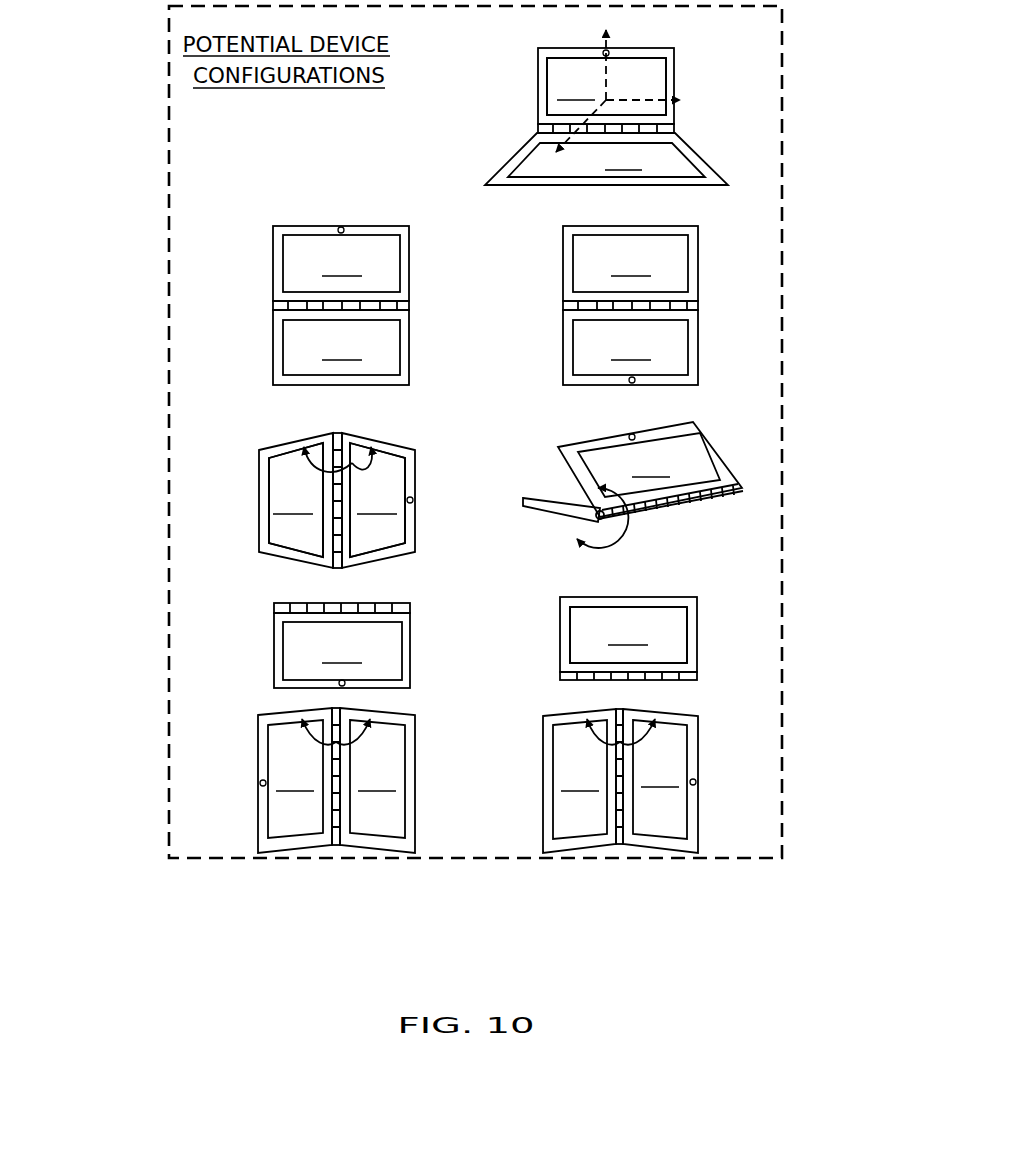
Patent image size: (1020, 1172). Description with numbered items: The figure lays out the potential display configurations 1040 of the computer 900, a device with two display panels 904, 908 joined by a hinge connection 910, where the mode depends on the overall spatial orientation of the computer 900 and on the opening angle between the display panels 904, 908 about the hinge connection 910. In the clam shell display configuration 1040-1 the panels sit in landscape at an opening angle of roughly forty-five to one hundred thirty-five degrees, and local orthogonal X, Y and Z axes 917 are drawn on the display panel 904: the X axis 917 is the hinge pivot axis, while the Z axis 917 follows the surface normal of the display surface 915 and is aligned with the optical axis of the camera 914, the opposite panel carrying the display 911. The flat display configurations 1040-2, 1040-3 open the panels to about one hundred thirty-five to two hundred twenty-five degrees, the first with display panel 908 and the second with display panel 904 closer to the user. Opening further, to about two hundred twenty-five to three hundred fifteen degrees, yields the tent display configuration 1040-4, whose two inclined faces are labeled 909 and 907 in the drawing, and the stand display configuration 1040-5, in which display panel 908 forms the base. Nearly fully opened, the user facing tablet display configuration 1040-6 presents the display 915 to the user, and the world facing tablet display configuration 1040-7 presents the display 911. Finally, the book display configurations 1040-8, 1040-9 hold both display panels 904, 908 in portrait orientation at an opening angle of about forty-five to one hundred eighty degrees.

The potential display configurations 1040 is at (168, 118).
The clam shell display configuration 1040-1 is at (537, 82).
The flat display configuration 1040-2 is at (272, 247).
The flat display configuration 1040-3 is at (562, 250).
The tent display configuration 1040-4 is at (258, 500).
The stand display configuration 1040-5 is at (562, 517).
The user facing tablet display configuration 1040-6 is at (274, 650).
The world facing tablet display configuration 1040-7 is at (560, 622).
The book display configuration 1040-8 is at (400, 713).
The book display configuration 1040-9 is at (690, 710).
The computer 900 is at (538, 77).
The display panel 904 is at (537, 97).
The display panel 908 is at (517, 148).
The hinge connection 910 is at (675, 126).
The camera 914 is at (609, 52).
The display surface 915 is at (606, 86).
The display 911 is at (628, 635).
The local orthogonal X, Y and Z axes 917 is at (608, 80).
The first display 909 is at (296, 500).
The second display 907 is at (377, 500).